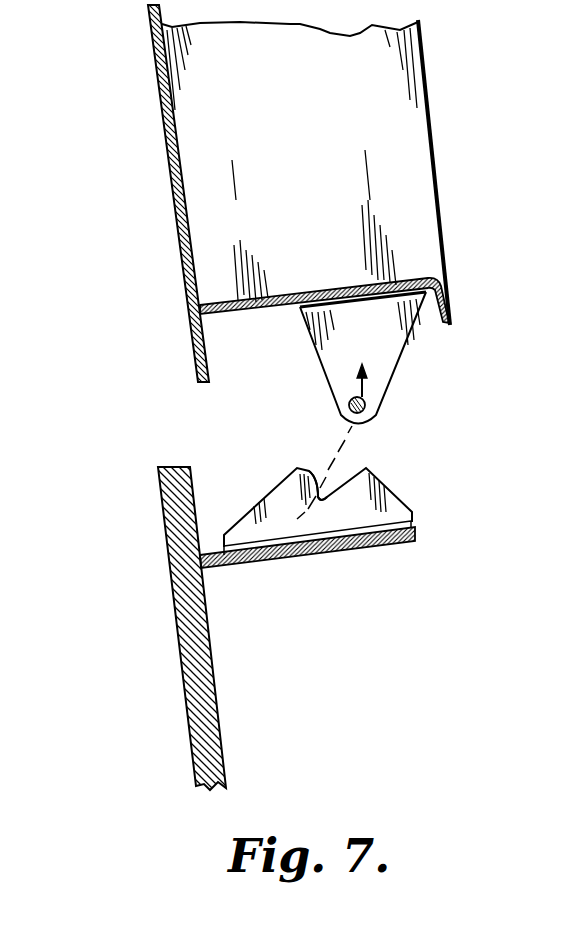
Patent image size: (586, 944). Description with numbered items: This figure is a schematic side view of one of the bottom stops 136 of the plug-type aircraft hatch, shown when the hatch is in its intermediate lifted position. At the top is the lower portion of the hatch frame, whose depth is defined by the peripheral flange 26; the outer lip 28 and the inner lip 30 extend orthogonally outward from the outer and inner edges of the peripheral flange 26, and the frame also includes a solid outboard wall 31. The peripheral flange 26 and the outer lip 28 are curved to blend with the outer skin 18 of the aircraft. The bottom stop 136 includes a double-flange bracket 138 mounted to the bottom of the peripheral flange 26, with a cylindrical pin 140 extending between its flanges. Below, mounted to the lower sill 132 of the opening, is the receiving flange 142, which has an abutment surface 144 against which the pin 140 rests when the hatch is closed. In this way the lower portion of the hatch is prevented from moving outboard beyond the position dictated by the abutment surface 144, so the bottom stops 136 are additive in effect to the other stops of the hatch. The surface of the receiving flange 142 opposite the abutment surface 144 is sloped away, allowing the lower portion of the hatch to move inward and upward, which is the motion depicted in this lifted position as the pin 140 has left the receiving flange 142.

The outer skin 18 is at (172, 640).
The peripheral flange 26 is at (289, 298).
The outer lip 28 is at (205, 363).
The inner lip 30 is at (452, 307).
The solid outboard wall 31 is at (170, 192).
The lower sill 132 is at (312, 557).
The bottom stop 136 is at (428, 358).
The double-flange bracket 138 is at (390, 343).
The cylindrical pin 140 is at (347, 406).
The receiving flange 142 is at (388, 500).
The abutment surface 144 is at (316, 492).